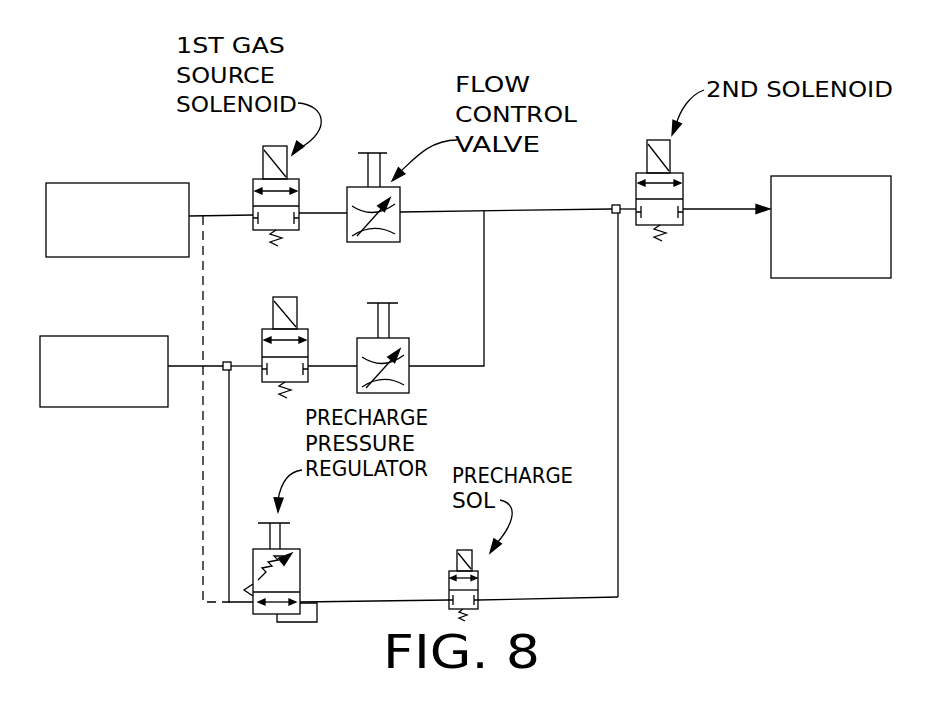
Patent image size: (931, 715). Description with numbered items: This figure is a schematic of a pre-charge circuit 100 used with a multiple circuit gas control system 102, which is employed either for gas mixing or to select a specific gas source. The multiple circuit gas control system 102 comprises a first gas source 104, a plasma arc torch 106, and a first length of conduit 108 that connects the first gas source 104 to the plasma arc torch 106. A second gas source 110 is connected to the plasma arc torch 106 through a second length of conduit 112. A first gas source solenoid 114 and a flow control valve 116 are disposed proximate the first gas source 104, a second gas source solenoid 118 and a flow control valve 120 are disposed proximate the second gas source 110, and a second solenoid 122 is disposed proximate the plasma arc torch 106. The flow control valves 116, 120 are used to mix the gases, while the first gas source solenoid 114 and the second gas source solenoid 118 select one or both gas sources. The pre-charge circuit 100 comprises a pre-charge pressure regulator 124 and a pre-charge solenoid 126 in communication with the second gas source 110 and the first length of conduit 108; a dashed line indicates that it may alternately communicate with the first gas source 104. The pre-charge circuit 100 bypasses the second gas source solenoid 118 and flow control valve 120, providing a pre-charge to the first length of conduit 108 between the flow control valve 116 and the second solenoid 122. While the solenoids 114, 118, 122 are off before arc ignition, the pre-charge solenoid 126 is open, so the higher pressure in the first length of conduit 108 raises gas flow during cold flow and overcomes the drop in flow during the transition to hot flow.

The pre-charge circuit 100 is at (630, 413).
The multiple circuit gas control system 102 is at (636, 46).
The first gas source 104 is at (118, 183).
The plasma arc torch 106 is at (797, 278).
The first length of conduit 108 is at (618, 205).
The second gas source 110 is at (120, 408).
The second length of conduit 112 is at (486, 302).
The first gas source solenoid 114 is at (254, 178).
The flow control valve 116 is at (401, 228).
The second gas source solenoid 118 is at (261, 349).
The flow control valve 120 is at (398, 338).
The second solenoid 122 is at (668, 232).
The pre-charge pressure regulator 124 is at (300, 578).
The pre-charge solenoid 126 is at (478, 587).